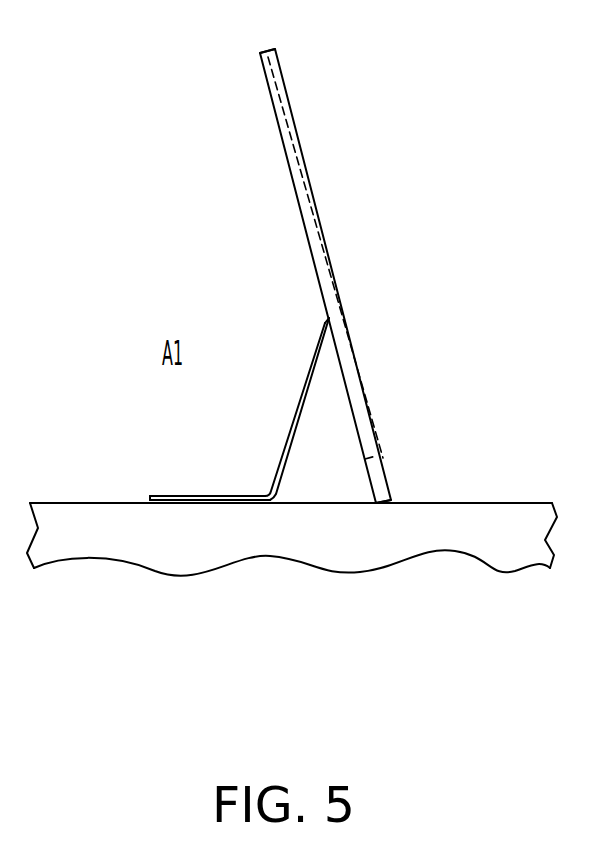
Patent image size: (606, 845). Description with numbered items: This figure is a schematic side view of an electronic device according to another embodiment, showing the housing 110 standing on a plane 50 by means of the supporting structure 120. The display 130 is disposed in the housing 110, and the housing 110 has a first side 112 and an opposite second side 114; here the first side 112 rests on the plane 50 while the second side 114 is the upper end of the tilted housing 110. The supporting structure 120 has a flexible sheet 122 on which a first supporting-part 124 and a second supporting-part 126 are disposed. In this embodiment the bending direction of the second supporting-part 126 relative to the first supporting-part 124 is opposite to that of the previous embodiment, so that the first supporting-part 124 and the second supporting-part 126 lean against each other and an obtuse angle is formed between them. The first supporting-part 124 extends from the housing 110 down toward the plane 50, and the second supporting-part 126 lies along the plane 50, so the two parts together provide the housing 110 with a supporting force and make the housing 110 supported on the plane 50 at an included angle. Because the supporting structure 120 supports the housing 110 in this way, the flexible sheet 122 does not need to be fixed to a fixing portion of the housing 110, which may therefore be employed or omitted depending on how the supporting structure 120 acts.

The plane 50 is at (502, 490).
The housing 110 is at (382, 483).
The first side 112 is at (387, 512).
The second side 114 is at (262, 47).
The supporting structure 120 is at (301, 479).
The flexible sheet 122 is at (306, 387).
The first supporting-part 124 is at (322, 357).
The second supporting-part 126 is at (210, 508).
The display 130 is at (306, 236).